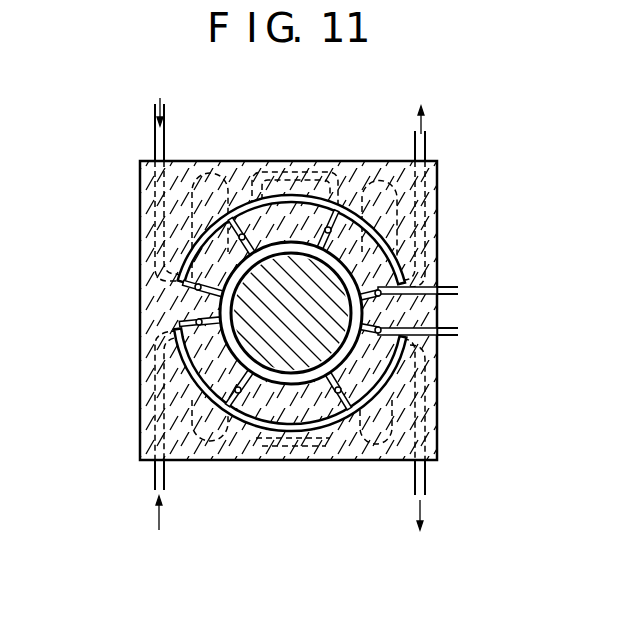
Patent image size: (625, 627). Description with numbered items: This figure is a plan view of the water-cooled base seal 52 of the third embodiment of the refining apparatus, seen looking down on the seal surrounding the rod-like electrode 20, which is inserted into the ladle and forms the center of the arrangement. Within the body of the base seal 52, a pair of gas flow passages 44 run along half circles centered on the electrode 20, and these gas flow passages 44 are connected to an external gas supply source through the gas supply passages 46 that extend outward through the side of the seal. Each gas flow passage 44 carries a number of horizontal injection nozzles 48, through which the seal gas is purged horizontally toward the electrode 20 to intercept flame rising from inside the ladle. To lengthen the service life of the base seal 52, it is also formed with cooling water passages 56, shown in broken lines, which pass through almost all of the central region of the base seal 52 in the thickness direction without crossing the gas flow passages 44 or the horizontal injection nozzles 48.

The electrode 20 is at (236, 318).
The gas flow passage 44 is at (293, 428).
The gas supply passage 46 is at (442, 287).
The horizontal injection nozzle 48 is at (258, 427).
The base seal 52 is at (145, 403).
The cooling water passage 56 is at (372, 448).